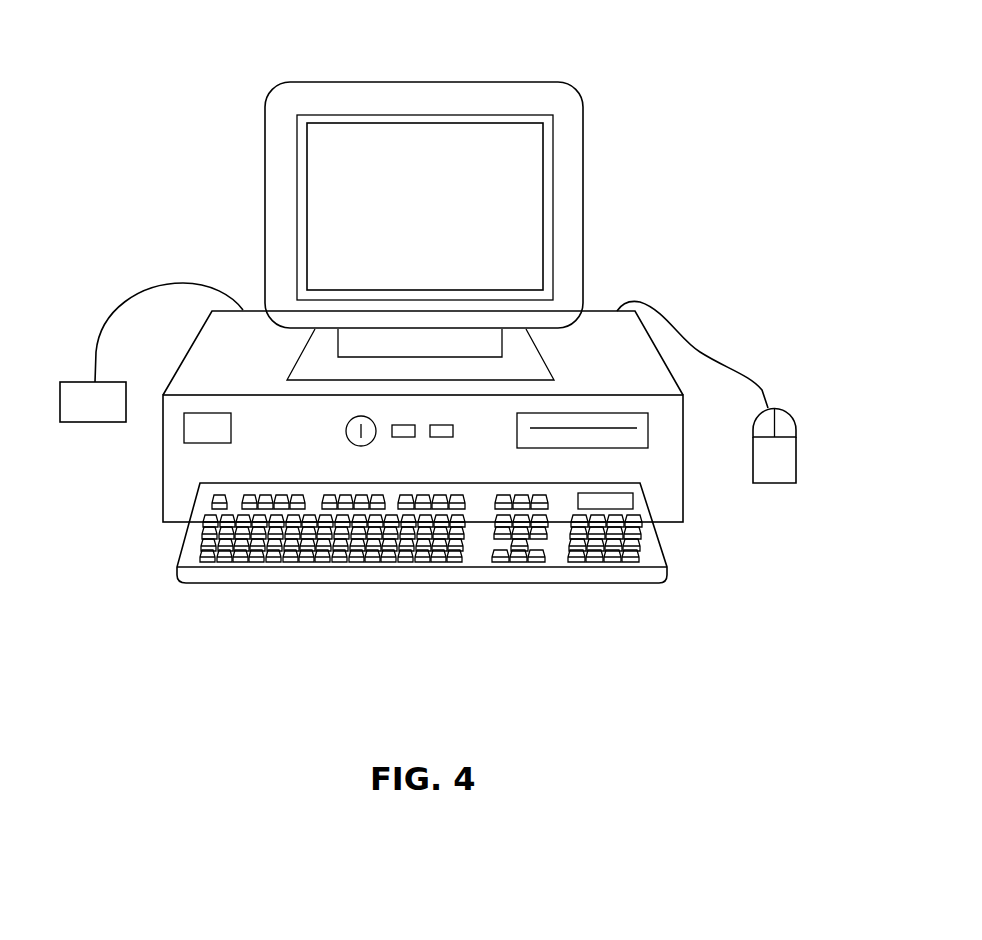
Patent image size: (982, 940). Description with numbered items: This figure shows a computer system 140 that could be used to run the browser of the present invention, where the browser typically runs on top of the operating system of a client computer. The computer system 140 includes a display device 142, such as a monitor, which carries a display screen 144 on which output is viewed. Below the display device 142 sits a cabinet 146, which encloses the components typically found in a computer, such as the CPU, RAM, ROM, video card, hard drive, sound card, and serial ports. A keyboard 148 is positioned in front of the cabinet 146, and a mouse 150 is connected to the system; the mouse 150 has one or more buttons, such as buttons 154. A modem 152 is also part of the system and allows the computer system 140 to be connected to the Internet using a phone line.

The computer system 140 is at (650, 89).
The display device 142 is at (584, 168).
The display screen 144 is at (518, 142).
The cabinet 146 is at (598, 325).
The keyboard 148 is at (418, 583).
The mouse 150 is at (785, 468).
The modem 152 is at (98, 422).
The buttons 154 is at (766, 420).